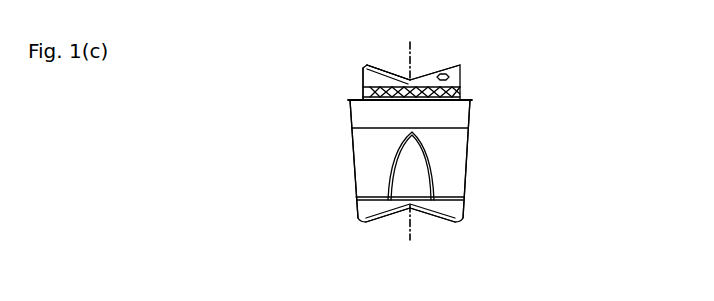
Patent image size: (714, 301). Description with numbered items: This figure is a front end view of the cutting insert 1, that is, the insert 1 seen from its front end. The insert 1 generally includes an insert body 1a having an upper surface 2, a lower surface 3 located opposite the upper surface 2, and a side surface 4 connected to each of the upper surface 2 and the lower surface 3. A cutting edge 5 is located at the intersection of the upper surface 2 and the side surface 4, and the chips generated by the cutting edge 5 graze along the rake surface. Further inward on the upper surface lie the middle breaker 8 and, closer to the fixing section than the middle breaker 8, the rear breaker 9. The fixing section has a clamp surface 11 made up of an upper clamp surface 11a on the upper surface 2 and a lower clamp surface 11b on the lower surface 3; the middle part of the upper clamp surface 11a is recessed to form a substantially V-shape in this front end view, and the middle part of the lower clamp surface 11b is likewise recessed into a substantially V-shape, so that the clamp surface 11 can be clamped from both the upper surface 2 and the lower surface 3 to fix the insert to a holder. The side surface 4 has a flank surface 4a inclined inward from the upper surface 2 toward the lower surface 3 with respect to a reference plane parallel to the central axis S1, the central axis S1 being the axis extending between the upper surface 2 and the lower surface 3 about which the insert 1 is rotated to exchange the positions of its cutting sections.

The central axis S1 is at (407, 50).
The insert 1 is at (417, 172).
The insert body 1a is at (484, 99).
The upper surface 2 is at (424, 74).
The lower surface 3 is at (393, 212).
The side surface 4 is at (354, 154).
The flank surface 4a is at (410, 168).
The cutting edge 5 is at (356, 93).
The middle breaker 8 is at (405, 80).
The rear breaker 9 is at (366, 80).
The clamp surface 11 is at (397, 138).
The upper clamp surface 11a is at (443, 70).
The lower clamp surface 11b is at (381, 224).